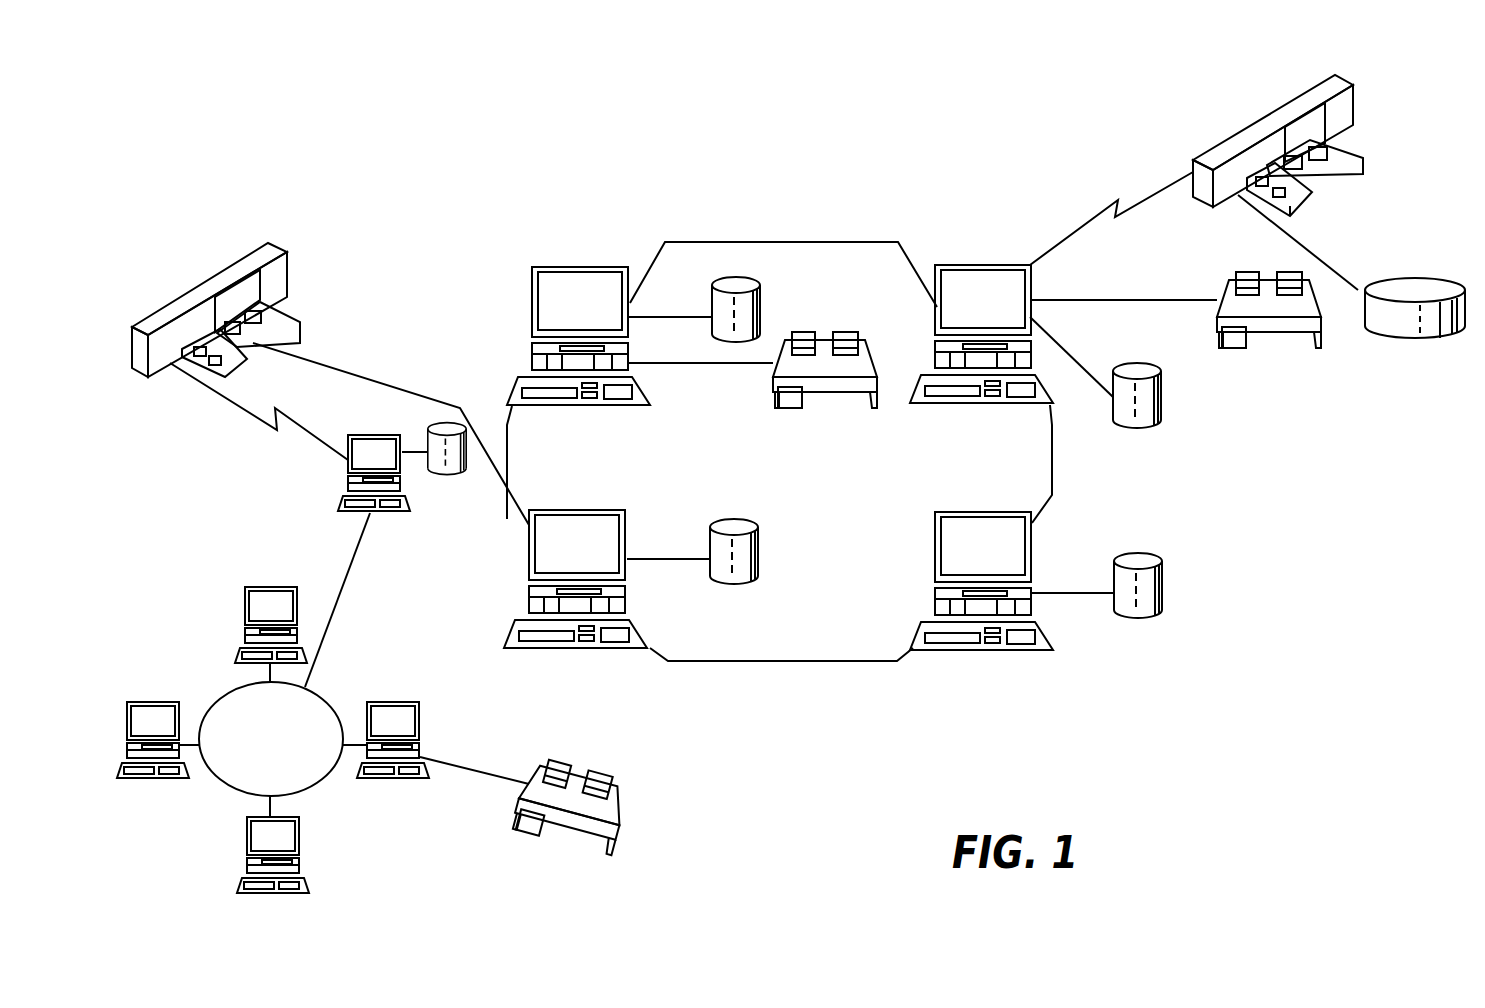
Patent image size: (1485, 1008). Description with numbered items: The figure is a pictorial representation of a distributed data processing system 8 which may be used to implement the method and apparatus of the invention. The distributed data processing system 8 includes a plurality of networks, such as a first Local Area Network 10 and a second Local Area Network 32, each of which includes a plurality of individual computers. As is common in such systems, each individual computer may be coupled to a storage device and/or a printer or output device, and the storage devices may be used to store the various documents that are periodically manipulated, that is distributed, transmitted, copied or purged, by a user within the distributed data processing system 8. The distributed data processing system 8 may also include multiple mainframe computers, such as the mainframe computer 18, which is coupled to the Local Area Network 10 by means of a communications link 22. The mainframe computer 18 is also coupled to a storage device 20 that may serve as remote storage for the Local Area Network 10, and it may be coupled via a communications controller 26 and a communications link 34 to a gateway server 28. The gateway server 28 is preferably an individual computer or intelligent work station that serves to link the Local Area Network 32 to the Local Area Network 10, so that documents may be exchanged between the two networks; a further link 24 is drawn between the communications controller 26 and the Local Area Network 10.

The distributed data processing system 8 is at (814, 195).
The Local Area Network 10 is at (806, 662).
The mainframe computer 18 is at (1272, 110).
The storage device 20 is at (1433, 280).
The communications link 22 is at (1152, 193).
The communications link 24 is at (383, 373).
The communications controller 26 is at (277, 253).
The gateway server 28 is at (377, 433).
The Local Area Network 32 is at (223, 787).
The communications link 34 is at (298, 433).